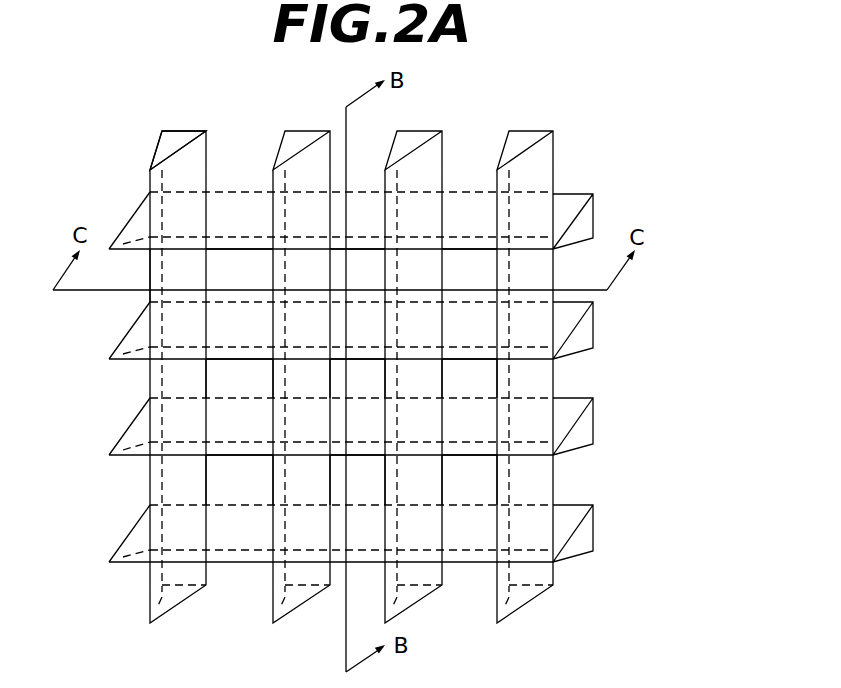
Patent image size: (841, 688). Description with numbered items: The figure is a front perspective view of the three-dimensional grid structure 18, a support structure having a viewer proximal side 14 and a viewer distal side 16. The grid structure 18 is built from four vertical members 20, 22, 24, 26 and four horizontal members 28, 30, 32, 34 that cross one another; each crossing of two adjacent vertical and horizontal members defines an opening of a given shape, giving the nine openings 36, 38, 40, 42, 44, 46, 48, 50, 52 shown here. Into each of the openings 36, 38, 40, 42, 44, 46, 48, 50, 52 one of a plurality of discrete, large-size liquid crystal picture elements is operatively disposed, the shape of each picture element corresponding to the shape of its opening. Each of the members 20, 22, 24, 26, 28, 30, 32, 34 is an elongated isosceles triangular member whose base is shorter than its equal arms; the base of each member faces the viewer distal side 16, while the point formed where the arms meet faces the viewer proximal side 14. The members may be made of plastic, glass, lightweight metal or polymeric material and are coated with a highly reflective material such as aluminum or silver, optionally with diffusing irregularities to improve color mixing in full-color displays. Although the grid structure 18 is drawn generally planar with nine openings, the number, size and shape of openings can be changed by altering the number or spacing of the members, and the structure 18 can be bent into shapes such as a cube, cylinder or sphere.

The viewer proximal side 14 is at (148, 272).
The viewer distal side 16 is at (190, 133).
The three-dimensional grid structure 18 is at (679, 325).
The vertical member 20 is at (150, 162).
The vertical member 22 is at (330, 165).
The vertical member 24 is at (442, 150).
The vertical member 26 is at (548, 162).
The horizontal member 28 is at (593, 210).
The horizontal member 30 is at (594, 330).
The horizontal member 32 is at (594, 422).
The horizontal member 34 is at (594, 535).
The opening 36 is at (255, 280).
The opening 38 is at (372, 277).
The opening 40 is at (485, 273).
The opening 42 is at (239, 378).
The opening 44 is at (357, 378).
The opening 46 is at (469, 378).
The opening 48 is at (239, 480).
The opening 50 is at (357, 480).
The opening 52 is at (469, 480).